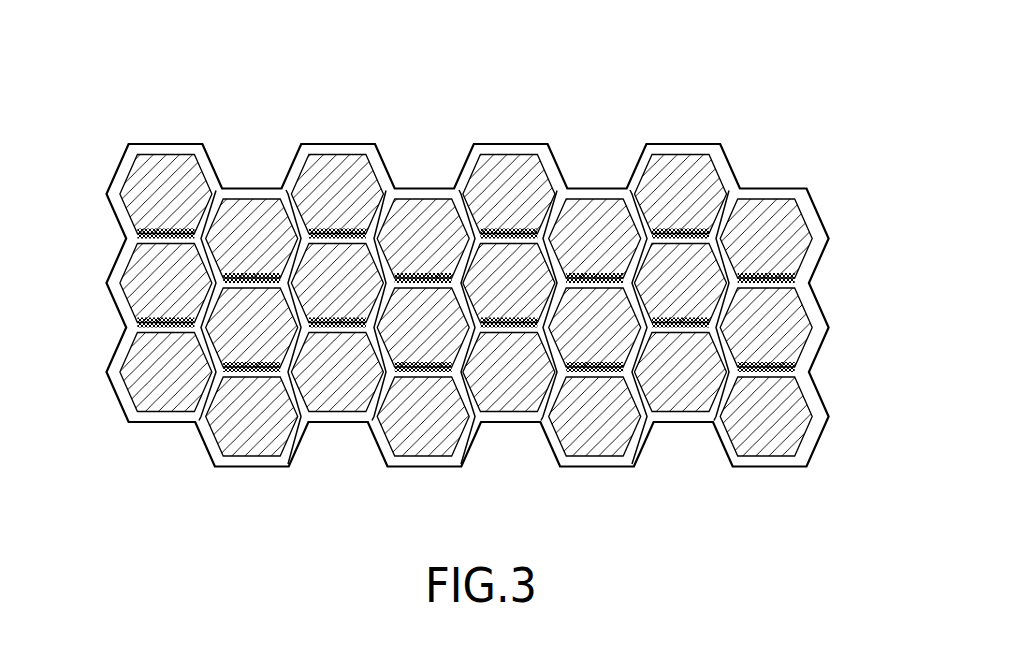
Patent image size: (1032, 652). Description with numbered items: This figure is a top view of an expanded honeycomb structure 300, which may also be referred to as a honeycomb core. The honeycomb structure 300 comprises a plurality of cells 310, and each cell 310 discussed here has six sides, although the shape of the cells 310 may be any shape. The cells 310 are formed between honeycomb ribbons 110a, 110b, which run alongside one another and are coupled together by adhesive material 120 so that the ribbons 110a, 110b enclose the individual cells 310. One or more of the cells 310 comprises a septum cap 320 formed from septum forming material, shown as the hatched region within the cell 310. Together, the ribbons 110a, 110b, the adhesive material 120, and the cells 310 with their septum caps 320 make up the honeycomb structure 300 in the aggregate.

The expanded honeycomb structure 300 is at (468, 243).
The cell 310 is at (328, 157).
The septum cap 320 is at (358, 178).
The adhesive material 120 is at (153, 239).
The honeycomb ribbon 110a is at (121, 233).
The honeycomb ribbon 110b is at (120, 251).